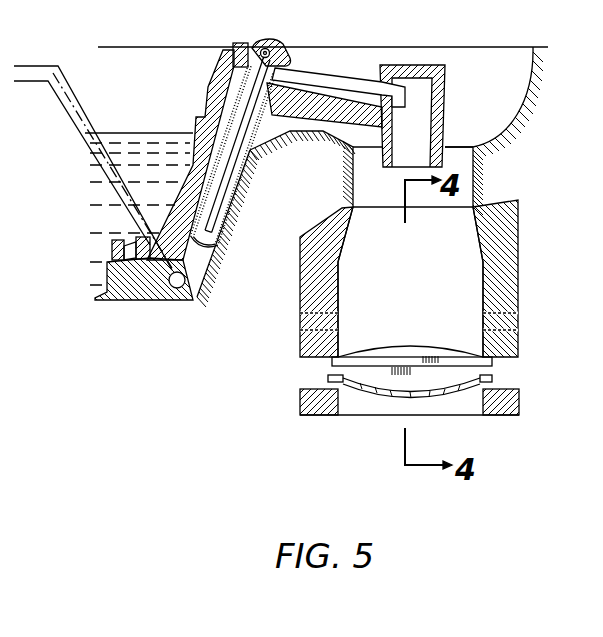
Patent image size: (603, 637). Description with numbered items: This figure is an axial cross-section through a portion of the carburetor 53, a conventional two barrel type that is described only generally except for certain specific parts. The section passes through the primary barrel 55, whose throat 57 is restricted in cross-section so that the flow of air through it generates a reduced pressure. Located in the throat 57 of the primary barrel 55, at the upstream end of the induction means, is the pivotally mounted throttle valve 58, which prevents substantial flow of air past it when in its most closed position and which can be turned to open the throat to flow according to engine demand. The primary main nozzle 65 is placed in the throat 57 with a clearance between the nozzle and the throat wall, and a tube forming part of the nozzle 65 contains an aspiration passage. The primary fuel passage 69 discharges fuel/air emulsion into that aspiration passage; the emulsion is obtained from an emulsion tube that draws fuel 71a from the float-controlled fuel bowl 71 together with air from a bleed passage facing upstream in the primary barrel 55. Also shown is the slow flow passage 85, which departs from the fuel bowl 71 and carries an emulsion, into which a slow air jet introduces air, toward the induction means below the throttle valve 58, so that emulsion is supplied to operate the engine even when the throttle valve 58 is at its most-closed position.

The carburetor 53 is at (524, 237).
The primary barrel 55 is at (415, 294).
The throat 57 is at (392, 203).
The throttle valve 58 is at (447, 372).
The primary main nozzle 65 is at (452, 85).
The primary fuel passage 69 is at (330, 78).
The fuel bowl 71 is at (138, 98).
The fuel 71a is at (132, 132).
The slow flow passage 85 is at (23, 65).